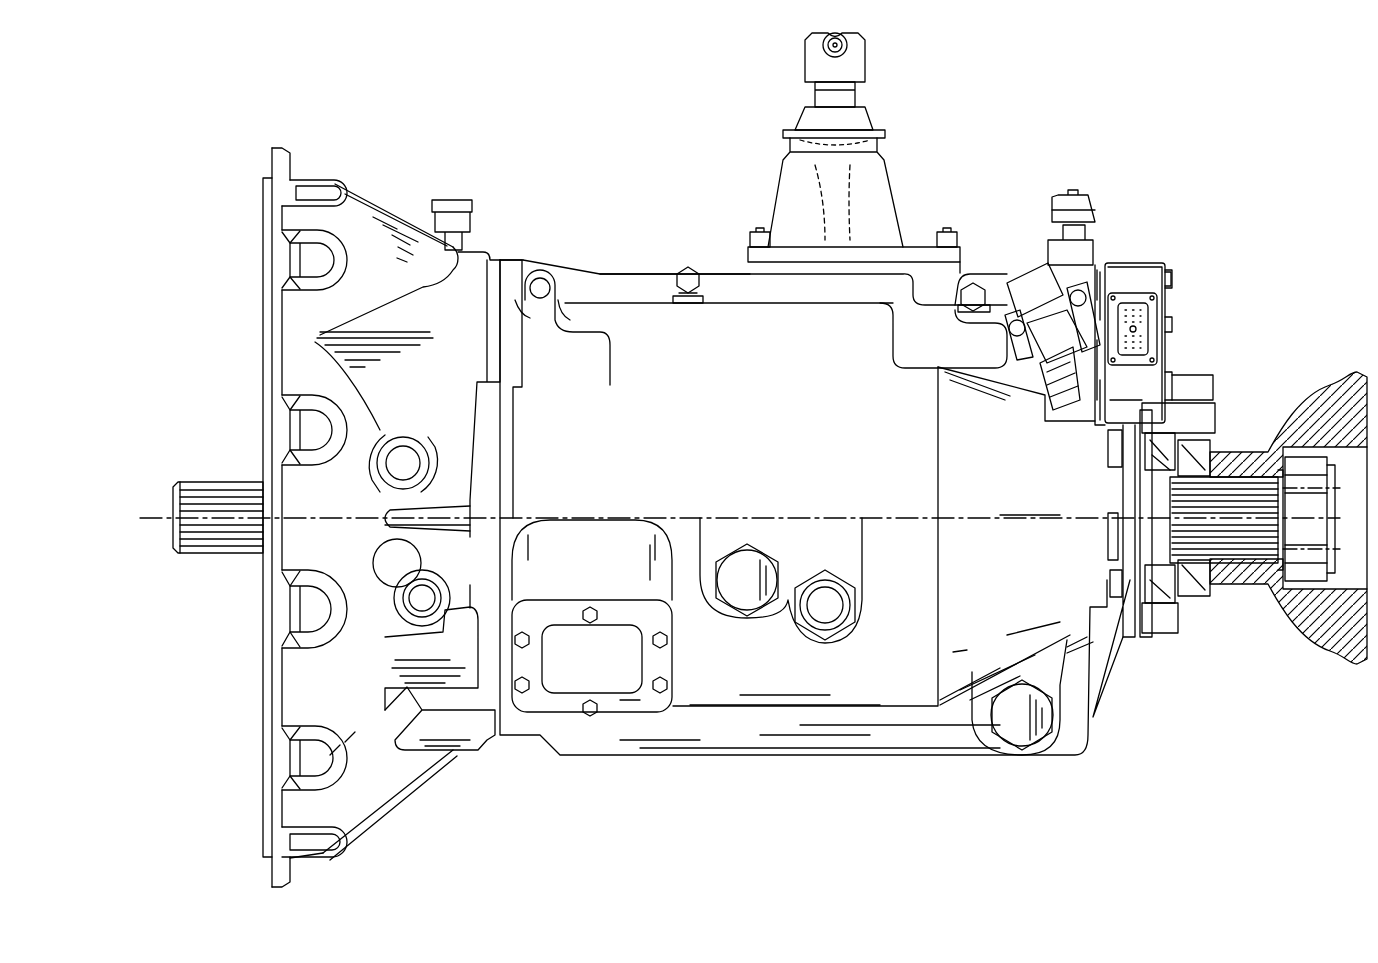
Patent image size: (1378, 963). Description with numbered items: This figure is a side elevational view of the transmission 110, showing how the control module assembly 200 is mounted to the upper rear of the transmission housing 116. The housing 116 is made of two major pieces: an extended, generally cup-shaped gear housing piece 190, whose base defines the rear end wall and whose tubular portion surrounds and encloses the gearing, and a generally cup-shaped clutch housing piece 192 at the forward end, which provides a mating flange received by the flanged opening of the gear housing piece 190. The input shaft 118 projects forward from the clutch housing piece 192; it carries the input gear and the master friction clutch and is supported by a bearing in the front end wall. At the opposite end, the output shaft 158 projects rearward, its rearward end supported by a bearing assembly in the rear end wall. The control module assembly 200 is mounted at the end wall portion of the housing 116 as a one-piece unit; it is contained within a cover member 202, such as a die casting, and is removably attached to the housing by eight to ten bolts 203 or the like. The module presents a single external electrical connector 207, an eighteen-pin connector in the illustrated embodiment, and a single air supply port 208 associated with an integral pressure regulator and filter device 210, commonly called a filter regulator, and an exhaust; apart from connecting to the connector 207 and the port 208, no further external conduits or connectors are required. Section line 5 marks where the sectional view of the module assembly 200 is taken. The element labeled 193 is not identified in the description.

The transmission 110 is at (1138, 144).
The transmission housing 116 is at (617, 297).
The input shaft 118 is at (226, 530).
The output shaft 158 is at (1230, 497).
The gear housing piece 190 is at (824, 745).
The clutch housing piece 192 is at (373, 755).
The shift tower 193 is at (793, 303).
The control module assembly 200 is at (1140, 248).
The cover member 202 is at (1138, 274).
The bolts 203 is at (1173, 280).
The external electrical connector 207 is at (1152, 318).
The air supply port 208 is at (968, 325).
The pressure regulator and filter device 210 is at (1035, 368).
The section line 5— 5 is at (1122, 252).